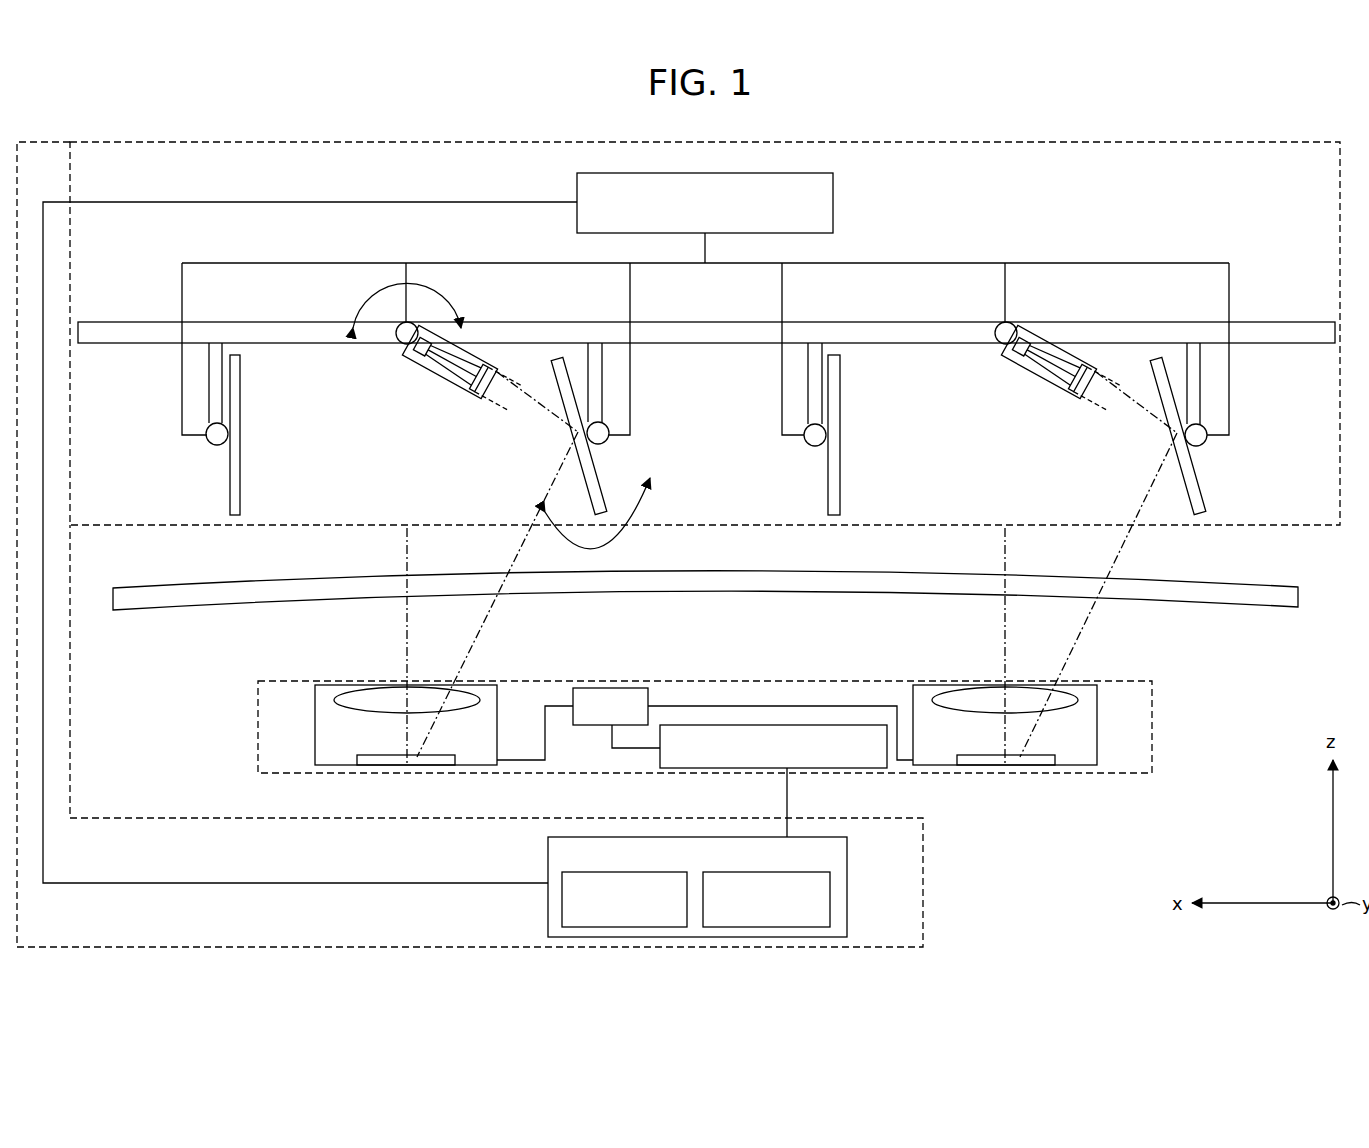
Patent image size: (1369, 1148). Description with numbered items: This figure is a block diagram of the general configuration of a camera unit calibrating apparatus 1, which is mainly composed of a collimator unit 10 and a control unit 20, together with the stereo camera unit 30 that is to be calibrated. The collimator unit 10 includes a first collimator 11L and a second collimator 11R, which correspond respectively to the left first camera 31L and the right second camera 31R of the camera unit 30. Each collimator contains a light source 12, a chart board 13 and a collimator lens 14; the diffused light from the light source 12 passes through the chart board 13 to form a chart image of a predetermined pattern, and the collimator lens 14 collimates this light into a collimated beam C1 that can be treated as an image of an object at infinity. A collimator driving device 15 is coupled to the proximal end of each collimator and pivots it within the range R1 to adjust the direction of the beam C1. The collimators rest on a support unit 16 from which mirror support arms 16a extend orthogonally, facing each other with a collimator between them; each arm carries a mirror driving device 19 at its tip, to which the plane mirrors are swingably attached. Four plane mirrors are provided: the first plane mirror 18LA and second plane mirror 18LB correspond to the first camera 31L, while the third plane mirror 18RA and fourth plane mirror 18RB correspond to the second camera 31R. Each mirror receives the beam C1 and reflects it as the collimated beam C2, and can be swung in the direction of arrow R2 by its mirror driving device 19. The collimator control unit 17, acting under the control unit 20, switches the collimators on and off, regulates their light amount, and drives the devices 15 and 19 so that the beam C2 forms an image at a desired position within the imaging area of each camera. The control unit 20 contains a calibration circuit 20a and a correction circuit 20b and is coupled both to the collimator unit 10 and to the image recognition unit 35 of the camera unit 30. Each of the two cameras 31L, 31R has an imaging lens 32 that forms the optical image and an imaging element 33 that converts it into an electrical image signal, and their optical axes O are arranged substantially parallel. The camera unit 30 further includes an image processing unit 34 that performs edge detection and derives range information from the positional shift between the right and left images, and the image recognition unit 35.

The calibrating apparatus 1 is at (120, 118).
The collimator unit 10 is at (1298, 597).
The first collimator 11L is at (362, 392).
The second collimator 11R is at (1025, 378).
The light source 12 is at (418, 348).
The chart board 13 is at (432, 372).
The collimator lens 14 is at (472, 398).
The collimator driving device 15 is at (395, 340).
The support unit 16 is at (706, 330).
The mirror support arm 16a is at (213, 370).
The collimator control unit 17 is at (833, 192).
The first plane mirror 18LA is at (230, 490).
The second plane mirror 18LB is at (598, 483).
The third plane mirror 18RA is at (828, 490).
The fourth plane mirror 18RB is at (1203, 495).
The mirror driving device 19 is at (215, 440).
The control unit 20 is at (680, 835).
The calibration circuit 20a is at (562, 897).
The correction circuit 20b is at (830, 907).
The camera unit 30 is at (1152, 705).
The first camera 31L is at (585, 648).
The second camera 31R is at (887, 648).
The imaging lens 32 is at (477, 683).
The imaging element 33 is at (450, 755).
The image processing unit (IPU) 34 is at (622, 688).
The image recognition unit 35 is at (725, 725).
The collimated beam C1 is at (532, 418).
The collimated beam C2 is at (545, 480).
The collimator pivot range R1 is at (370, 300).
The mirror swing direction R2 is at (640, 528).
The optical axis O is at (406, 560).